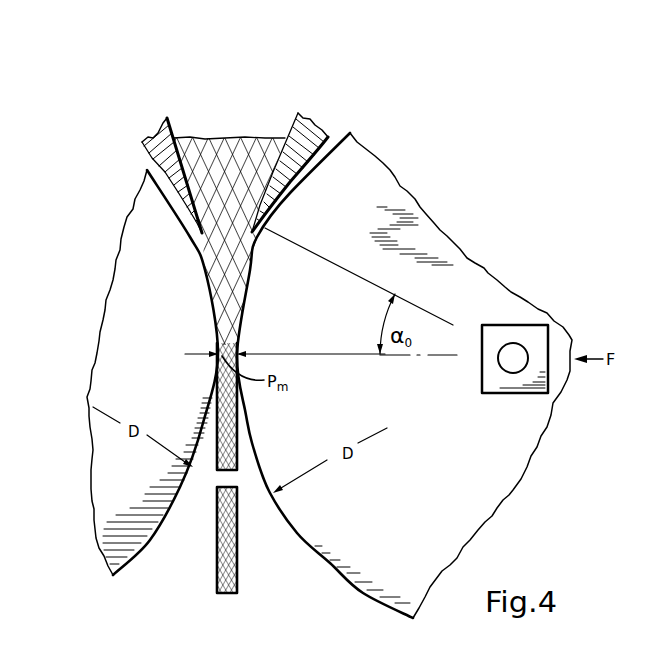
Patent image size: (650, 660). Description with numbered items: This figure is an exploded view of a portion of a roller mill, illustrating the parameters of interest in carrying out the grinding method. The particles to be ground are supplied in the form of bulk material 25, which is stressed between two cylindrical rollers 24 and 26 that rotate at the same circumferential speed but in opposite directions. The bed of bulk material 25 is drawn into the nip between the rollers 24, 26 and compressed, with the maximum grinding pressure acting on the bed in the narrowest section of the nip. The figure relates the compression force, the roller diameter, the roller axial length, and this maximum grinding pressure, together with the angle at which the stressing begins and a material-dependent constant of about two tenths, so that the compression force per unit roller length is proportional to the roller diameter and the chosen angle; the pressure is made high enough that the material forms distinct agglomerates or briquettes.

The cylindrical roller 24 is at (107, 340).
The bulk material 25 is at (220, 140).
The cylindrical roller 26 is at (428, 228).